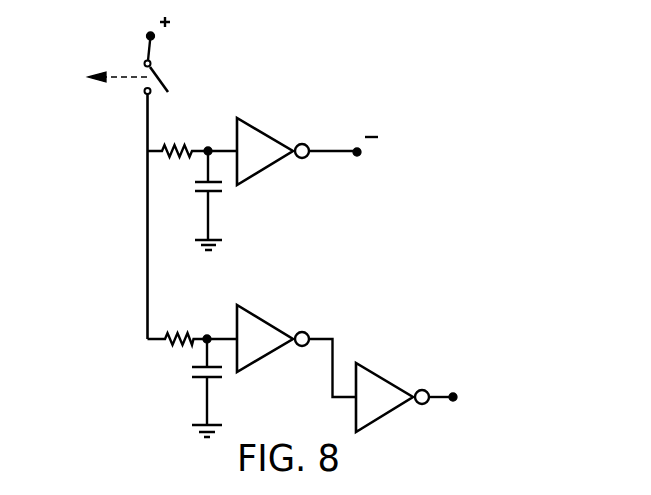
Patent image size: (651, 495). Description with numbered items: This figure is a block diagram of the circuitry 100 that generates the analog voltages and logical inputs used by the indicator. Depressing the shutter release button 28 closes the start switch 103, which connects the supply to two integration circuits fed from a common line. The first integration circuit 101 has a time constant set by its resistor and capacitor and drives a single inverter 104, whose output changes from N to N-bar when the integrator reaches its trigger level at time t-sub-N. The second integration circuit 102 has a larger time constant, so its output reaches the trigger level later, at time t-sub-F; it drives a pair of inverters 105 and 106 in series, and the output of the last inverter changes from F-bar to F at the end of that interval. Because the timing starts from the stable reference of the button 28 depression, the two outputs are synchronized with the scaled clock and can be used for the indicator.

The shutter release button 28 is at (94, 85).
The circuitry 100 is at (354, 252).
The integration circuit 101 is at (186, 188).
The integration circuit 102 is at (173, 371).
The start switch 103 is at (163, 63).
The inverter 104 is at (273, 160).
The inverter 105 is at (263, 315).
The inverter 106 is at (397, 383).